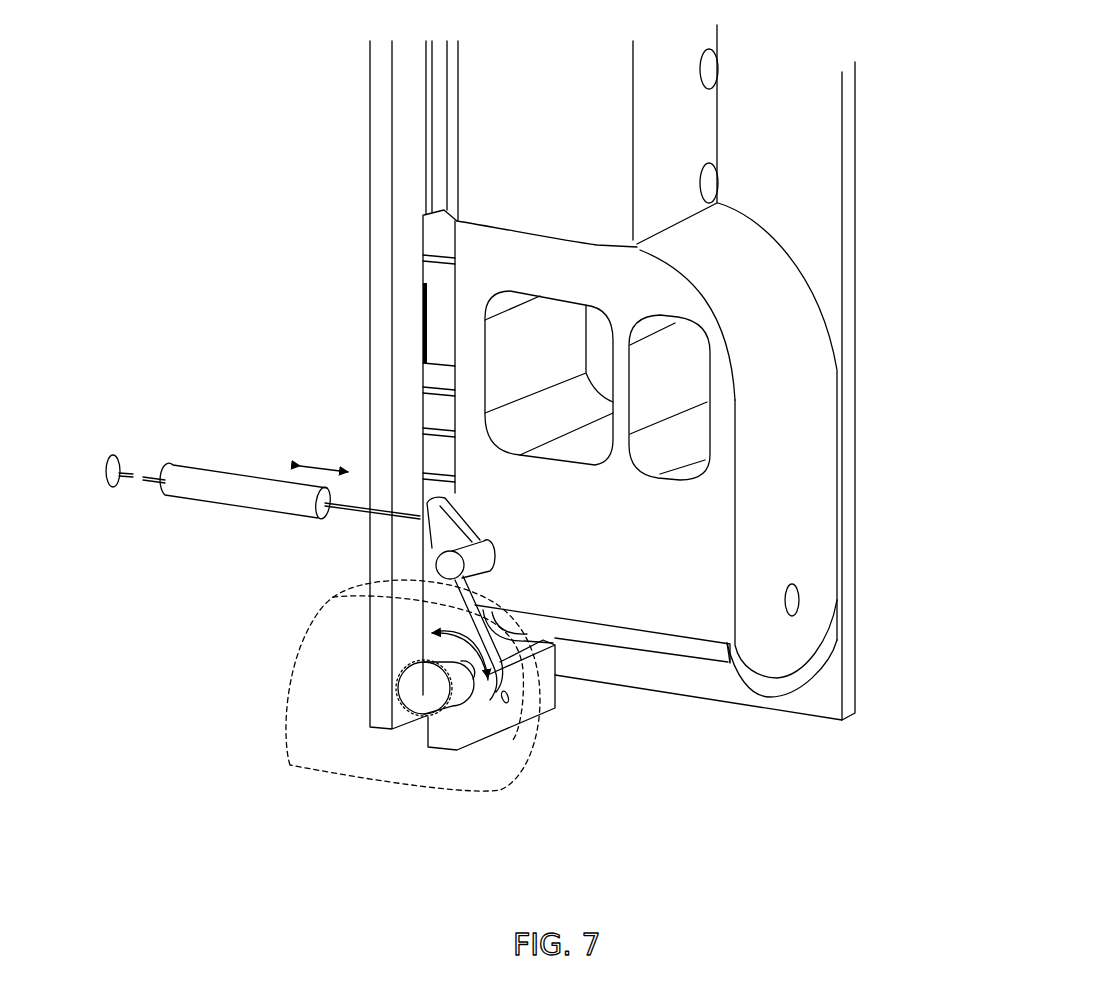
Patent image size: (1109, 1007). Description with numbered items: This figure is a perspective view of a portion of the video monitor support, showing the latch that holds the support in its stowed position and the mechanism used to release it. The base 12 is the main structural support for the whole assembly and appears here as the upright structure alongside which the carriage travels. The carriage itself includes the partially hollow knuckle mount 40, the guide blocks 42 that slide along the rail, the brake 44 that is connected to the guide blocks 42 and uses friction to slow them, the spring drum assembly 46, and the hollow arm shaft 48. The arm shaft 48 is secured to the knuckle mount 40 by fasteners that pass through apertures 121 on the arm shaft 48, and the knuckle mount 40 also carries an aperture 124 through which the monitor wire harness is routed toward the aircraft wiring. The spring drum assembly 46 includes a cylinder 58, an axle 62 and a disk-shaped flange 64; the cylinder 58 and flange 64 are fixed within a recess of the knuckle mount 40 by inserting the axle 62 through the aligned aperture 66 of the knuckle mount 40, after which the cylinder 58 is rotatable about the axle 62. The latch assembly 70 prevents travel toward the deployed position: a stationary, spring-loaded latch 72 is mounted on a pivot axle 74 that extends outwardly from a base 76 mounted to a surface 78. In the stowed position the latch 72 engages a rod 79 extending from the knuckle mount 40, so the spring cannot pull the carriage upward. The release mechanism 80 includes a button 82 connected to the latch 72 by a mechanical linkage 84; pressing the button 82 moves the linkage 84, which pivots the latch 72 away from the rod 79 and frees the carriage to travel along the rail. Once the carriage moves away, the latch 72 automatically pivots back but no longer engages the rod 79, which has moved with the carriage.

The base 12 is at (370, 177).
The knuckle mount 40 is at (800, 453).
The guide blocks 42 is at (425, 377).
The brake 44 is at (443, 748).
The spring drum assembly 46 is at (709, 722).
The arm shaft 48 is at (717, 122).
The cylinder 58 is at (617, 653).
The axle 62 is at (798, 601).
The disk-shaped flange 64 is at (775, 697).
The aperture 66 is at (797, 582).
The latch assembly 70 is at (304, 591).
The latch 72 is at (437, 536).
The pivot axle 74 is at (467, 673).
The base 76 is at (400, 697).
The surface 78 is at (512, 770).
The rod 79 is at (480, 558).
The mechanism 80 is at (214, 398).
The button 82 is at (115, 455).
The mechanical linkage 84 is at (237, 473).
The apertures 121 is at (708, 70).
The aperture 124 is at (571, 450).